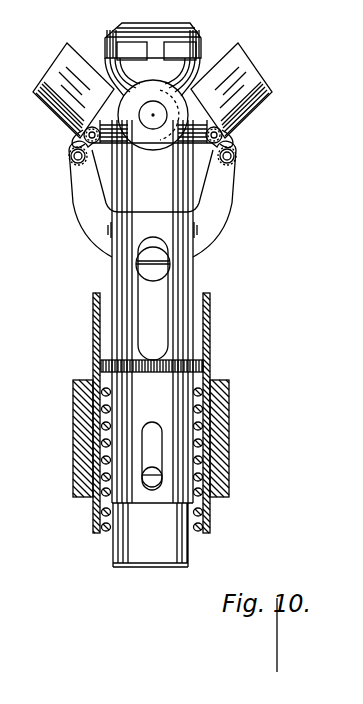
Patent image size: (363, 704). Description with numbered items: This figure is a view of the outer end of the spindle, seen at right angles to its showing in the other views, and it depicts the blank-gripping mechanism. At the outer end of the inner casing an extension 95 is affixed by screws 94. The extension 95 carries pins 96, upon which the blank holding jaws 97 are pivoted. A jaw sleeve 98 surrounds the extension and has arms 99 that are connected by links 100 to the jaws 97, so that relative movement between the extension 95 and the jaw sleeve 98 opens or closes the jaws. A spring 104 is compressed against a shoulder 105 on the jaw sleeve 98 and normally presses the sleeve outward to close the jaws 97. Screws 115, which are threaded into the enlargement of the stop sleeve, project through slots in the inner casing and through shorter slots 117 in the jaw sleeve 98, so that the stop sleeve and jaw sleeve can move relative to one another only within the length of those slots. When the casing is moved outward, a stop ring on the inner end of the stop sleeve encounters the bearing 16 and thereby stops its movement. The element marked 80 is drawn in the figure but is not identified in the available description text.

The bearing 16 is at (213, 490).
The sleeve wall 80 is at (208, 407).
The screws 94 is at (145, 268).
The extension 95 is at (147, 286).
The pins 96 is at (156, 113).
The blank holding jaws 97 is at (269, 95).
The jaw sleeve 98 is at (186, 286).
The arms 99 is at (225, 199).
The links 100 is at (230, 143).
The spring 104 is at (199, 447).
The shoulder 105 is at (201, 367).
The screws 115 is at (148, 488).
The slots 117 is at (152, 443).